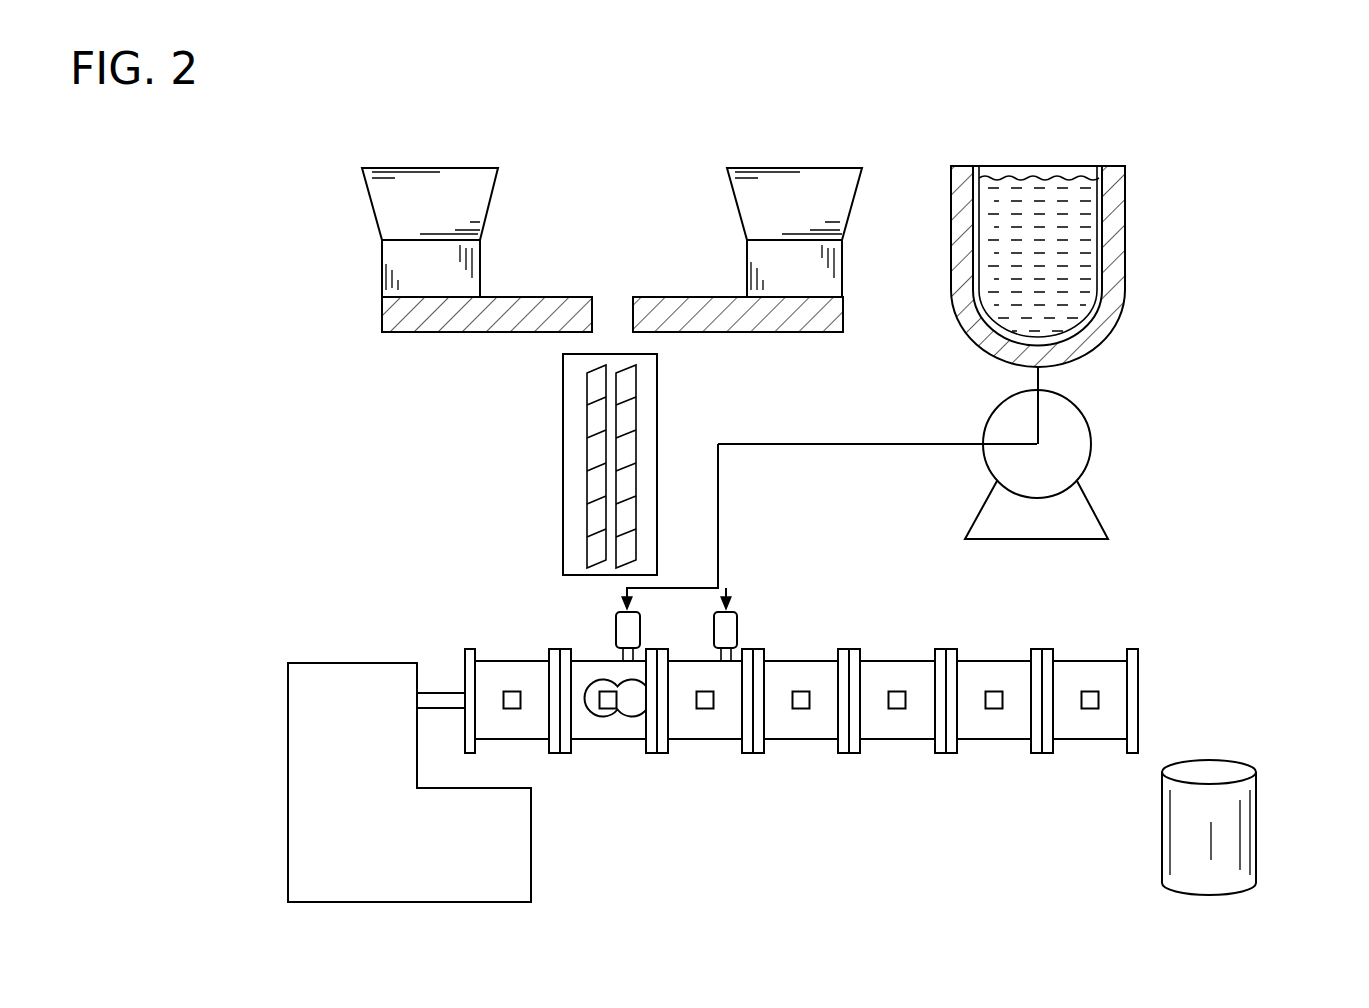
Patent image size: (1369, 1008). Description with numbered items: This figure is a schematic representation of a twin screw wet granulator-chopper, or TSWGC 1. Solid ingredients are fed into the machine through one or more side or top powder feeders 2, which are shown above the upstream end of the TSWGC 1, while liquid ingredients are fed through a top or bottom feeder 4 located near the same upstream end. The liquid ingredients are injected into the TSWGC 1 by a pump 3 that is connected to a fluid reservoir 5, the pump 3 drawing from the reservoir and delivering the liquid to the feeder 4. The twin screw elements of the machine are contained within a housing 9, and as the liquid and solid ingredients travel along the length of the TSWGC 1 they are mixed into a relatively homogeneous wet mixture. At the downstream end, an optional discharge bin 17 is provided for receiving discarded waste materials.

The twin screw wet granulator-chopper 1 is at (734, 717).
The powder feeder 2 is at (480, 267).
The pump 3 is at (1090, 430).
The top or bottom feeder 4 is at (738, 632).
The fluid reservoir 5 is at (1125, 235).
The housing 9 is at (697, 740).
The discharge bin 17 is at (1258, 827).